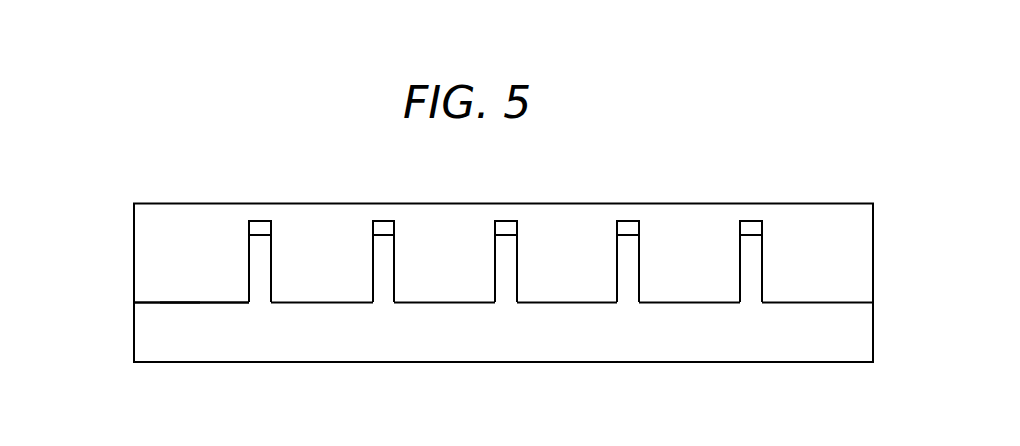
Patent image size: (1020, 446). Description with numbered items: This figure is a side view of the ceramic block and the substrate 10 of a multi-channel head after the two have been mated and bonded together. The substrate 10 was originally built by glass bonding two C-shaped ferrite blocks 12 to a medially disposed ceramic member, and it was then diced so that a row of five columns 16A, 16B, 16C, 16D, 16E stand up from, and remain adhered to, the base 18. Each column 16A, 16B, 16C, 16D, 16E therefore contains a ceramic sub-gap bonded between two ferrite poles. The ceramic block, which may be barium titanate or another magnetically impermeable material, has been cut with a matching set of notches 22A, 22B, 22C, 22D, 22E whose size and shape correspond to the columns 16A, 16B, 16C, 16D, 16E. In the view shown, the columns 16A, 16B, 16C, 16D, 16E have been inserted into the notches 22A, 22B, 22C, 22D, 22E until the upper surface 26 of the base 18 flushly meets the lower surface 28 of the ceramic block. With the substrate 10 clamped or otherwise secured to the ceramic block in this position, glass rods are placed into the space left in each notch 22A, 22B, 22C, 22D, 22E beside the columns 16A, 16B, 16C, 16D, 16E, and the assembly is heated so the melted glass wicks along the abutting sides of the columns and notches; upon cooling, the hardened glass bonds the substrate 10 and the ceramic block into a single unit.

The substrate 10 is at (278, 330).
The ferrite block 12 is at (485, 344).
The column 16A is at (258, 264).
The column 16B is at (381, 264).
The column 16C is at (503, 264).
The column 16D is at (625, 264).
The column 16E is at (748, 264).
The base 18 is at (771, 338).
The notch 22A is at (261, 228).
The notch 22B is at (384, 228).
The notch 22C is at (506, 228).
The notch 22D is at (628, 228).
The notch 22E is at (751, 228).
The upper surface 26 is at (185, 303).
The lower surface 28 is at (155, 302).